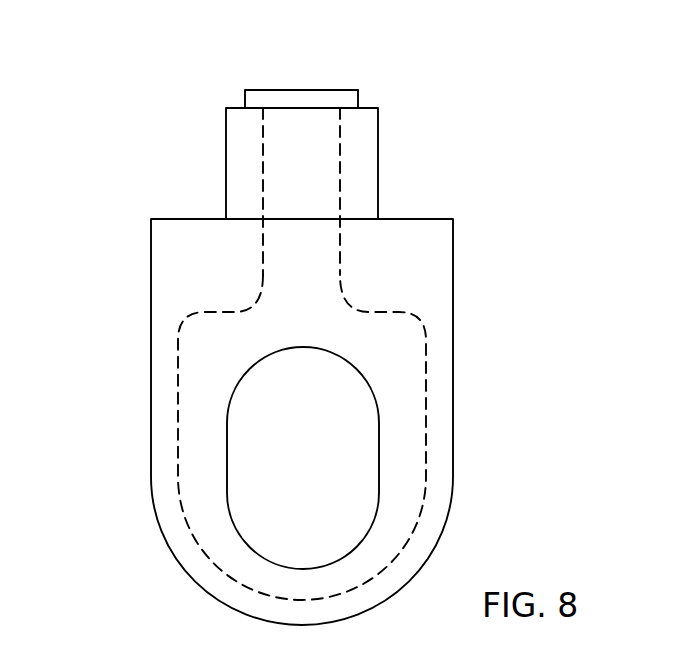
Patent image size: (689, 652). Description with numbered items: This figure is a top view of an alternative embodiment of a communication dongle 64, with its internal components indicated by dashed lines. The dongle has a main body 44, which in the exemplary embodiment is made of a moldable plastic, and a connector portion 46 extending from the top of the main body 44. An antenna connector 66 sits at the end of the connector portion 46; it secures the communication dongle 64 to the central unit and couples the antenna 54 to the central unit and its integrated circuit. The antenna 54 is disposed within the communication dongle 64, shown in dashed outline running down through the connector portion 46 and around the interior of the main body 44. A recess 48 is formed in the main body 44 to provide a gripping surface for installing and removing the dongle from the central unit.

The communication dongle 64 is at (148, 123).
The main body 44 is at (168, 548).
The connector portion 46 is at (375, 163).
The antenna connector 66 is at (338, 90).
The antenna 54 is at (423, 508).
The recess 48 is at (283, 445).